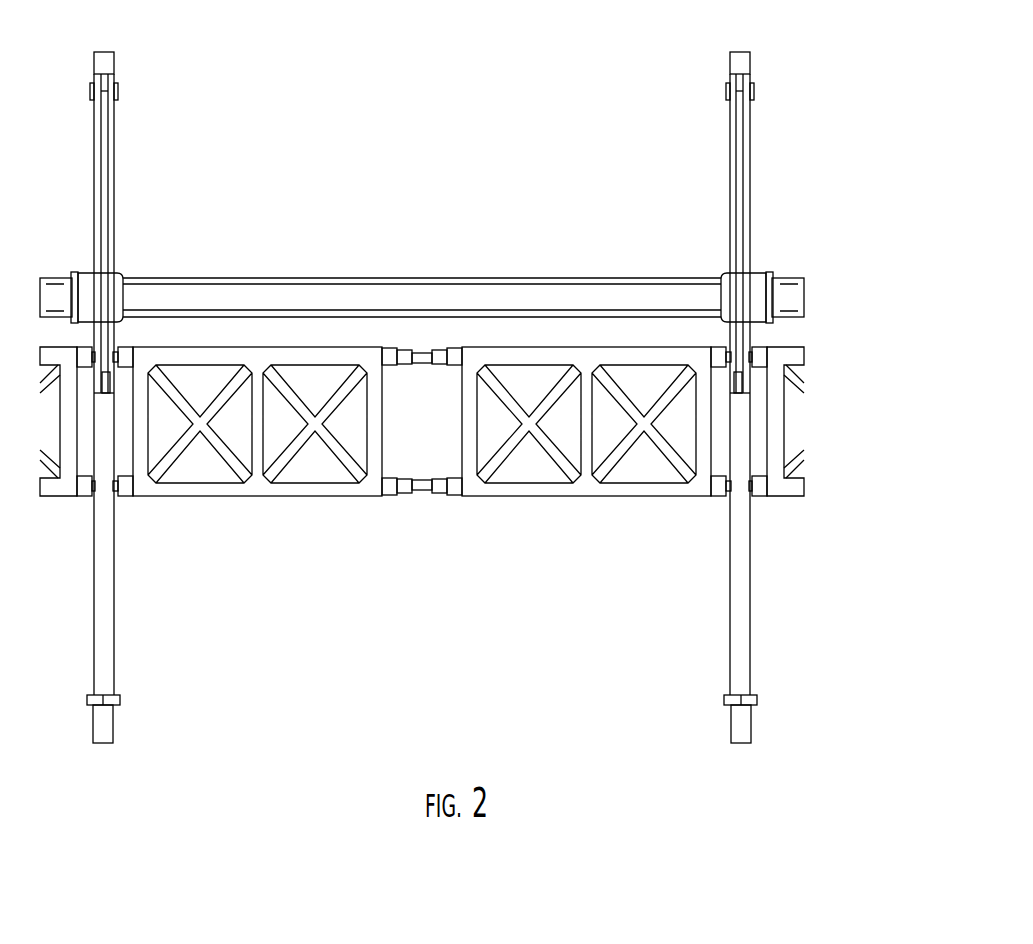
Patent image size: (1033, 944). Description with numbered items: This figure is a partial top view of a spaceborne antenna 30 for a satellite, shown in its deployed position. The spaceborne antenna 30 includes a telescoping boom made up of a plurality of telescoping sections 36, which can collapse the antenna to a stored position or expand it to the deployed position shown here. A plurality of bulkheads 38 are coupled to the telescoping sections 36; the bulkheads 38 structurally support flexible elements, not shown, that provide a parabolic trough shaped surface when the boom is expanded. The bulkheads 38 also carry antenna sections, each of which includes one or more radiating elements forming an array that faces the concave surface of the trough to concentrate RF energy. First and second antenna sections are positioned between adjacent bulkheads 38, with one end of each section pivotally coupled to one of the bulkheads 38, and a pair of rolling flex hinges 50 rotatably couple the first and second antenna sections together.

The spaceborne antenna 30 is at (845, 43).
The telescoping section 36 is at (332, 285).
The bulkhead 38 is at (107, 58).
The rolling flex hinge 50 is at (425, 353).